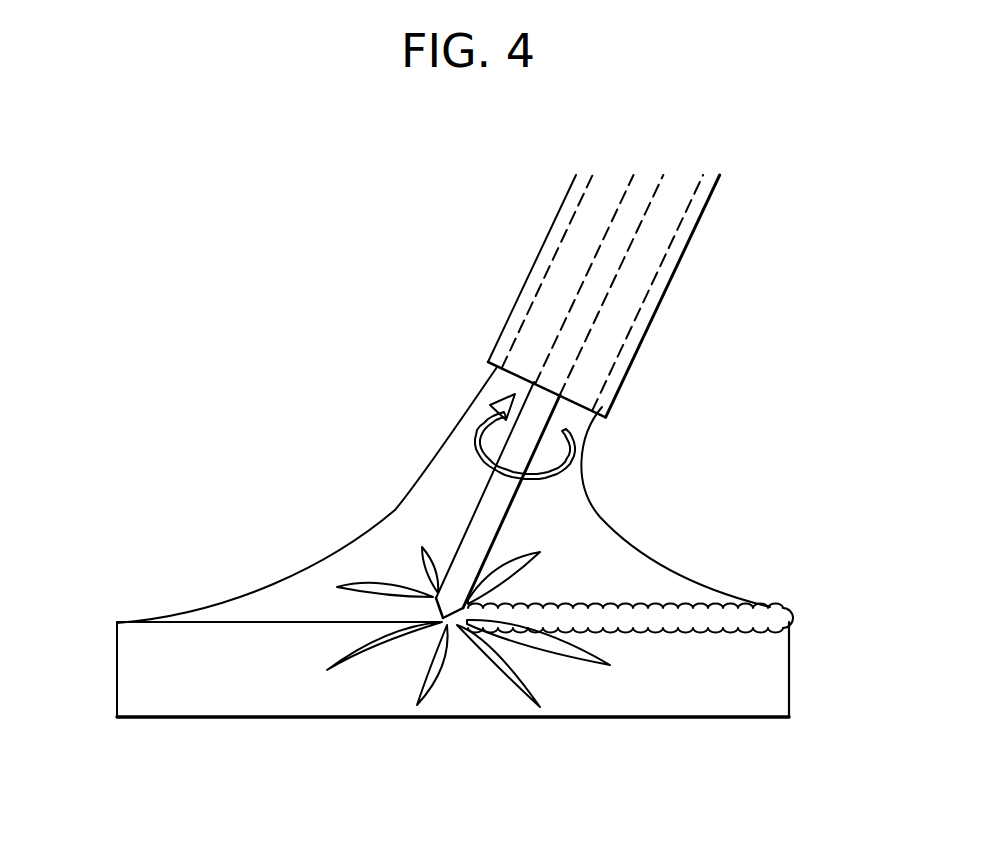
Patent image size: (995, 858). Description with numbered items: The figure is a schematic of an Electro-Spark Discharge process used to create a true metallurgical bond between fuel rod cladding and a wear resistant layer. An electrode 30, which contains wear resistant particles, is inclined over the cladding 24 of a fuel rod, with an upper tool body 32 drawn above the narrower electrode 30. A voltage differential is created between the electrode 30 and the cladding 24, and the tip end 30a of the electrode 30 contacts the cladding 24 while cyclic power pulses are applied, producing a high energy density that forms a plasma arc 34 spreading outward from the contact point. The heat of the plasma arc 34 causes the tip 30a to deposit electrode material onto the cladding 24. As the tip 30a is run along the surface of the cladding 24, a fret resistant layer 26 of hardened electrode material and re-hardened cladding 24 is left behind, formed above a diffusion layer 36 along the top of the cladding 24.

The cladding 24 is at (117, 653).
The fret resistant layer 26 is at (650, 607).
The electrode 30 is at (497, 505).
The tip end of the electrode 30a is at (480, 600).
The tool body / shoulder 32 is at (674, 278).
The plasma arc 34 is at (433, 520).
The diffusion layer 36 is at (760, 628).